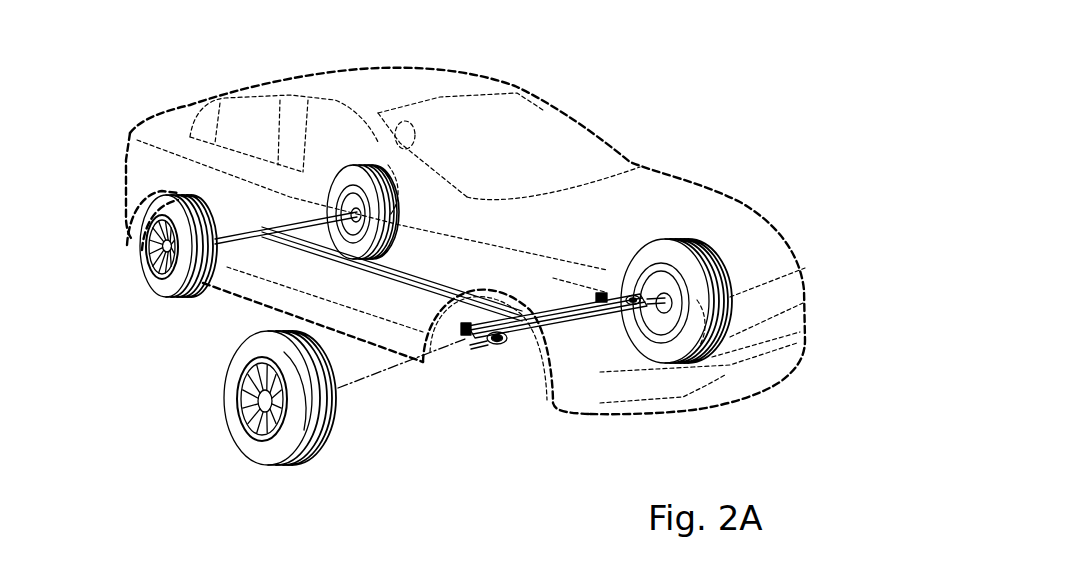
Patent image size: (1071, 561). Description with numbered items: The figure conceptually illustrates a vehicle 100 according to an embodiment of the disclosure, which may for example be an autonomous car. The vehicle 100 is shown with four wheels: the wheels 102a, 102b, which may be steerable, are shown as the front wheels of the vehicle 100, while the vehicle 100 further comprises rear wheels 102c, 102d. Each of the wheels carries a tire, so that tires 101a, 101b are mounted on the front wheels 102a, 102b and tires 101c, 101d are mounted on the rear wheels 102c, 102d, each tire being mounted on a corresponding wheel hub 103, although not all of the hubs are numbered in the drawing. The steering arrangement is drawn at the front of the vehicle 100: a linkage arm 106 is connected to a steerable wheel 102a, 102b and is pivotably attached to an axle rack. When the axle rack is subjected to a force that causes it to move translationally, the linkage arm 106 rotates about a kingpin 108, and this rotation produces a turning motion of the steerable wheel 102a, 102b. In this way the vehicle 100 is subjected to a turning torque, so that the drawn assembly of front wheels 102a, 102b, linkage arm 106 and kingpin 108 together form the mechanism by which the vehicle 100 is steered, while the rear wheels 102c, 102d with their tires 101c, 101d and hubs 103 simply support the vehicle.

The vehicle 100 is at (660, 74).
The tire 101a is at (739, 250).
The tire 101b is at (318, 433).
The tire 101c is at (159, 276).
The tire 101d is at (382, 140).
The wheel 102a is at (693, 238).
The wheel 102b is at (327, 445).
The rear wheel 102c is at (203, 293).
The rear wheel 102d is at (377, 164).
The wheel hub 103 is at (148, 253).
The linkage arm 106 is at (547, 306).
The kingpin 108 is at (503, 345).